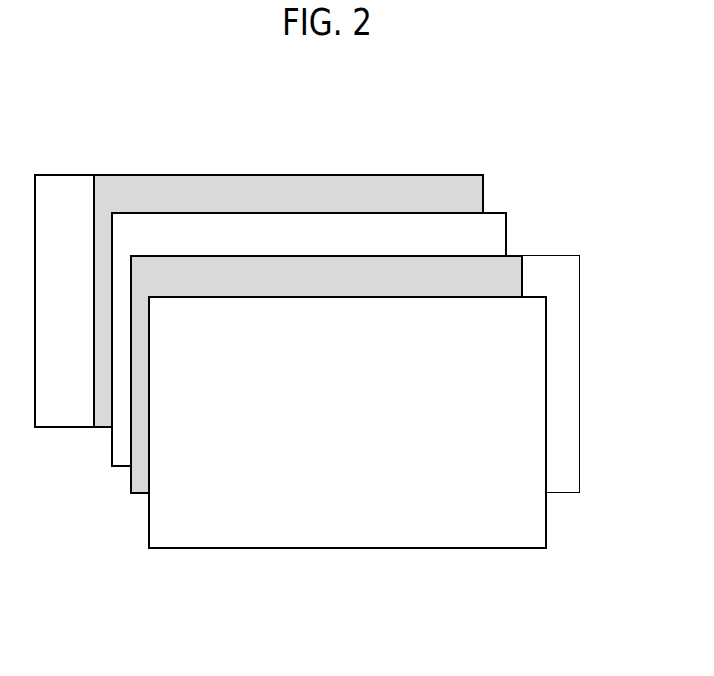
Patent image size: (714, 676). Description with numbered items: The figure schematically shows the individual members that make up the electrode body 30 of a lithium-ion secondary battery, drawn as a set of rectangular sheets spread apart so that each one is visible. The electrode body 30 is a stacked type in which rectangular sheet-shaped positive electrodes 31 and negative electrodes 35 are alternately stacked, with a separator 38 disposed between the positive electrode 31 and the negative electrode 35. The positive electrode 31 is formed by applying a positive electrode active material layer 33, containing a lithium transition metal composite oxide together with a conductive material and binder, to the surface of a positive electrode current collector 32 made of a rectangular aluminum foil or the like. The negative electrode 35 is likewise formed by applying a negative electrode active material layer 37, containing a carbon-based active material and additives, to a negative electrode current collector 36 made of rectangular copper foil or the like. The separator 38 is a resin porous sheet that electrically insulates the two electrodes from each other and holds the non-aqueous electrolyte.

The electrode body 30 is at (659, 103).
The positive electrode 31 is at (566, 255).
The positive electrode current collector 32 is at (580, 373).
The positive electrode active material layer 33 is at (138, 480).
The negative electrode 35 is at (408, 173).
The negative electrode current collector 36 is at (67, 175).
The negative electrode active material layer 37 is at (226, 184).
The separator 38 is at (505, 214).